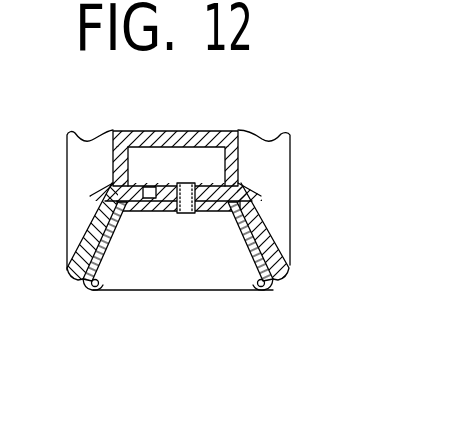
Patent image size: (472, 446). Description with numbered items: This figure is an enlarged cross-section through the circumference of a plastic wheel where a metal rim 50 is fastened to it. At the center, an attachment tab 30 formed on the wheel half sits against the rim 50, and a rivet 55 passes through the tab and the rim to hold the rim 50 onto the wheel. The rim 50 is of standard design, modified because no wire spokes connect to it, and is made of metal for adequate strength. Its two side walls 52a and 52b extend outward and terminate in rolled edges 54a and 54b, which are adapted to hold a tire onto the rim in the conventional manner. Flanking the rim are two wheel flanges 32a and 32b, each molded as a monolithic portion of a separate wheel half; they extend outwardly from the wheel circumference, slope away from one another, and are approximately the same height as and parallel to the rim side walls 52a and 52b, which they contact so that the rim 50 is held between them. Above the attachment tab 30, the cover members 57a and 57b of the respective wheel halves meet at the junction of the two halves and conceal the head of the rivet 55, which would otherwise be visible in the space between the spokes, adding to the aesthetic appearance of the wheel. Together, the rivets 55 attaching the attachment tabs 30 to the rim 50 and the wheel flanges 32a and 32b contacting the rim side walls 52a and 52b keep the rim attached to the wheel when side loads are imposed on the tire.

The attachment tab 30 is at (158, 185).
The wheel flange 32a is at (85, 236).
The wheel flange 32b is at (272, 229).
The rim 50 is at (123, 205).
The rim side wall 52a is at (93, 293).
The rim side wall 52b is at (249, 223).
The rolled edge 54a is at (86, 290).
The rolled edge 54b is at (273, 291).
The rivet 55 is at (185, 214).
The cover member 57a is at (147, 140).
The cover member 57b is at (203, 143).